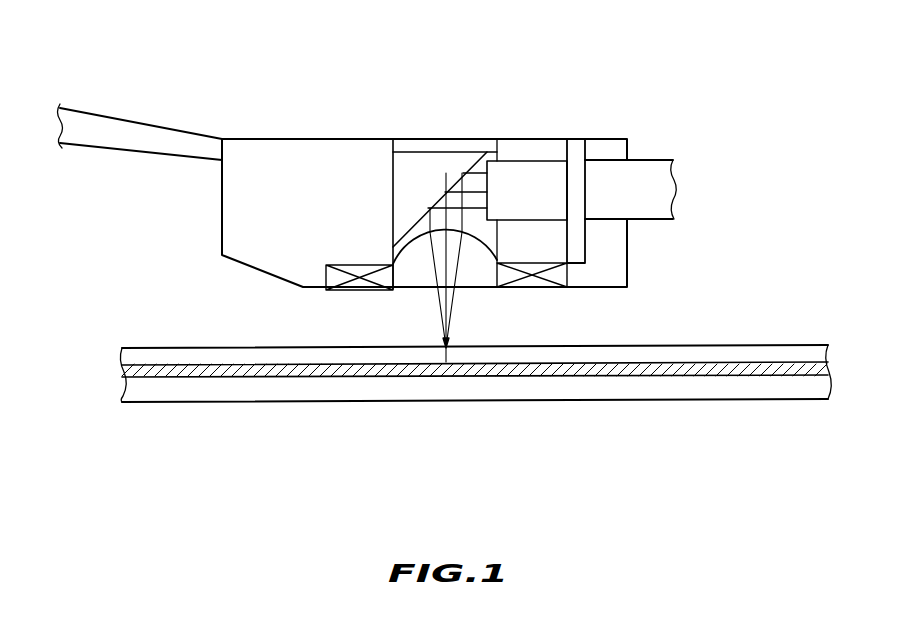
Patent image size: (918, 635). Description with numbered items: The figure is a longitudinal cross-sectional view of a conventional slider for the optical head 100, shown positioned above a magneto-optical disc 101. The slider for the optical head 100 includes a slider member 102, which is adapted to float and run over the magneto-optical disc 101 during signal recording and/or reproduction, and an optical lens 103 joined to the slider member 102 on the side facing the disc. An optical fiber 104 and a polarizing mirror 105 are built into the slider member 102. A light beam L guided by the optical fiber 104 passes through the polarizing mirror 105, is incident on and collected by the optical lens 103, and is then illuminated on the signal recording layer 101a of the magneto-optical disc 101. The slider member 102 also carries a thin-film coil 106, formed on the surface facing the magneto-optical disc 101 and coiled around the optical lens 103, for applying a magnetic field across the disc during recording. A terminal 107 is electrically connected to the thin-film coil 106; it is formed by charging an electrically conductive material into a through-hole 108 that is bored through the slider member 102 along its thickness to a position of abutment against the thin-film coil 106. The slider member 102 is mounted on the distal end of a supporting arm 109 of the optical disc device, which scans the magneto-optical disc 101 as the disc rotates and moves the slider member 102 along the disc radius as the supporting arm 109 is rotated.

The slider for the optical head 100 is at (312, 43).
The magneto-optical disc 101 is at (475, 373).
The signal recording layer 101a is at (733, 362).
The slider member 102 is at (243, 248).
The optical lens 103 is at (412, 283).
The optical fiber 104 is at (653, 168).
The polarizing mirror 105 is at (413, 163).
The thin-film coil 106 is at (533, 290).
The terminal 107 is at (577, 185).
The through-hole 108 is at (571, 154).
The supporting arm 109 is at (137, 135).
The light beam L is at (458, 322).